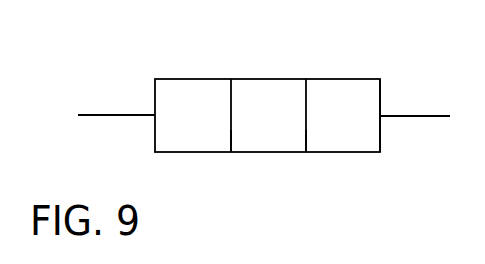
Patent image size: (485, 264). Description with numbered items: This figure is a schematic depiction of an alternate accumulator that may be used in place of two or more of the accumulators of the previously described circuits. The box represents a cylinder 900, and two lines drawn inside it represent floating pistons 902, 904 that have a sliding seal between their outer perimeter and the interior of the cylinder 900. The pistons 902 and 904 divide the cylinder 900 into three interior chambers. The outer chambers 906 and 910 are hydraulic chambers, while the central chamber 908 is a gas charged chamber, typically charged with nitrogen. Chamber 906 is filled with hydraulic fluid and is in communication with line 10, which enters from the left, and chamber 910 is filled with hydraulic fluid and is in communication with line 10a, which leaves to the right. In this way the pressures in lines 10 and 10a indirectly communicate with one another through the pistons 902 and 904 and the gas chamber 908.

The cylinder 900 is at (337, 78).
The floating piston 902 is at (231, 135).
The floating piston 904 is at (306, 130).
The interior chamber 906 is at (182, 99).
The central chamber 908 is at (265, 95).
The interior chamber 910 is at (360, 125).
The line 10 is at (110, 115).
The line 10a is at (428, 116).